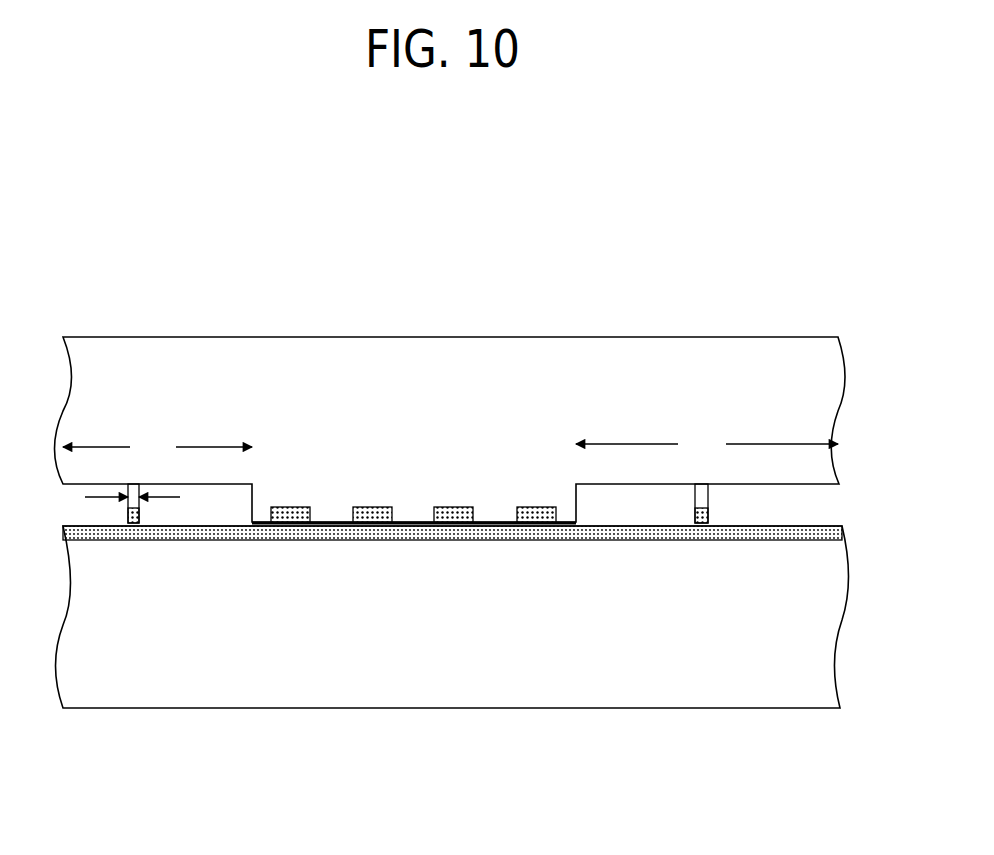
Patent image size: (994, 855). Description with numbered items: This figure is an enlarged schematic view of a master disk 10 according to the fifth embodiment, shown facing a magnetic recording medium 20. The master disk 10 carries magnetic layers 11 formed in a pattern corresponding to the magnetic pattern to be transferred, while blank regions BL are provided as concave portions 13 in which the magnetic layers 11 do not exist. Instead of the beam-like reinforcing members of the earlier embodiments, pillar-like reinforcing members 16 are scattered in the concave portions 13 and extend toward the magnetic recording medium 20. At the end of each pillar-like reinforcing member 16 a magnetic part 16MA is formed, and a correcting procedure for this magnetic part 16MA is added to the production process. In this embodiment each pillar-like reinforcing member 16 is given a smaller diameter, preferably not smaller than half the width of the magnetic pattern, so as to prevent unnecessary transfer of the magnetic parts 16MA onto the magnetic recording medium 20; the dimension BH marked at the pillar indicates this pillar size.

The master disk 10 is at (838, 378).
The magnetic layers 11 is at (538, 507).
The concave portions 13 is at (607, 502).
The pillar-like reinforcing members 16 is at (708, 487).
The magnetic part 16MA is at (701, 488).
The magnetic recording medium 20 is at (840, 578).
The blank regions BL is at (450, 447).
The bump height BH is at (134, 492).